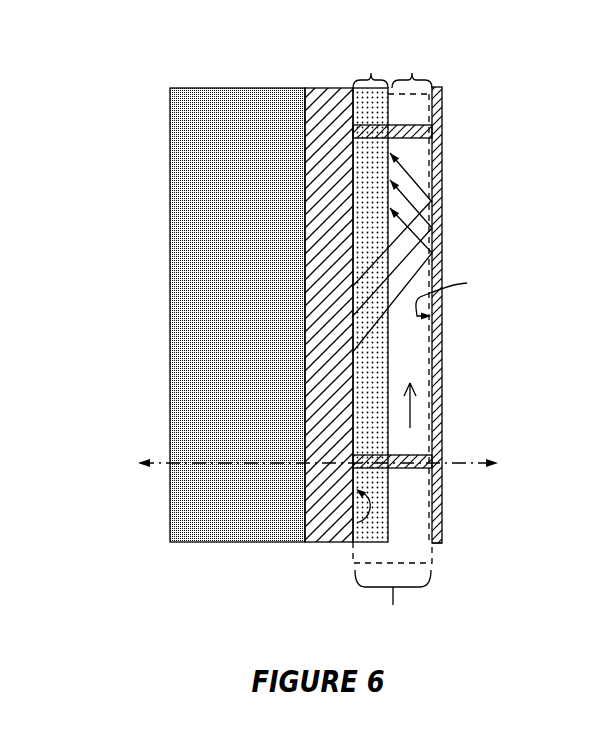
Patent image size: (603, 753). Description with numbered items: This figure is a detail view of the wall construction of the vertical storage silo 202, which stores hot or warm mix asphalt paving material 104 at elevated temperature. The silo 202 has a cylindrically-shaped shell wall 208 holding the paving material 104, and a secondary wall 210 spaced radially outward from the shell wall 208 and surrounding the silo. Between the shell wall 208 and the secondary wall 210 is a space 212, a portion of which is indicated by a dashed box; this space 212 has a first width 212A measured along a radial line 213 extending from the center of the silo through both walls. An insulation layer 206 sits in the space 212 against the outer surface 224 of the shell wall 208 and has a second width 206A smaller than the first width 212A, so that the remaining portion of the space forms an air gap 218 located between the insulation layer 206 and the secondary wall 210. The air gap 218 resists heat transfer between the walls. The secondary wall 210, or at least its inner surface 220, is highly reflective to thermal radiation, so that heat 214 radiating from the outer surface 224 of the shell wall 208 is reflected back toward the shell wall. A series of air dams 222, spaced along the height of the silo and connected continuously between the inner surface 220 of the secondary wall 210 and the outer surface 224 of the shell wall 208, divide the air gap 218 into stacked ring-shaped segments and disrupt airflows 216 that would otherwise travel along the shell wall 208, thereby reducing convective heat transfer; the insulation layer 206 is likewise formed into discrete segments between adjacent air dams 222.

The asphalt paving material mixture 104 is at (195, 355).
The vertical storage silo 202 is at (490, 233).
The insulation layer 206 is at (360, 117).
The second width 206A is at (360, 69).
The shell wall 208 is at (305, 101).
The secondary wall 210 is at (437, 88).
The space 212 is at (434, 545).
The first width 212A is at (392, 587).
The radial line 213 is at (182, 466).
The heat 214 is at (420, 186).
The airflow 216 is at (410, 421).
The air gap 218 is at (410, 295).
The inner surface 220 is at (464, 295).
The air dam 222 is at (433, 122).
The outer surface 224 is at (357, 523).